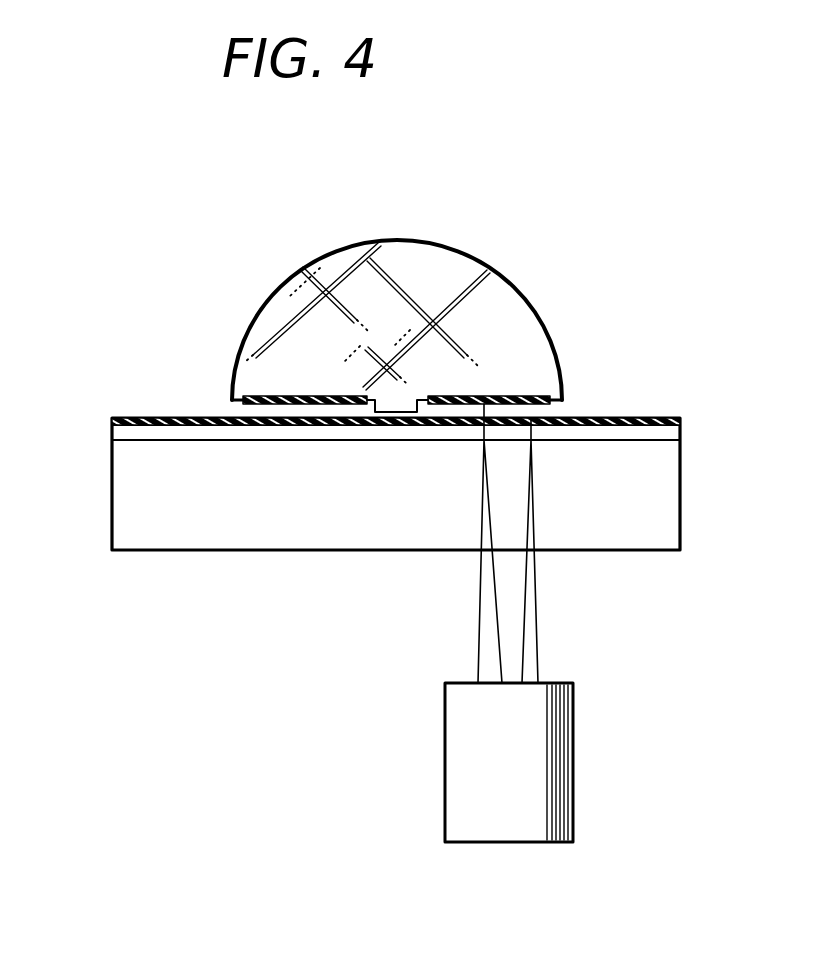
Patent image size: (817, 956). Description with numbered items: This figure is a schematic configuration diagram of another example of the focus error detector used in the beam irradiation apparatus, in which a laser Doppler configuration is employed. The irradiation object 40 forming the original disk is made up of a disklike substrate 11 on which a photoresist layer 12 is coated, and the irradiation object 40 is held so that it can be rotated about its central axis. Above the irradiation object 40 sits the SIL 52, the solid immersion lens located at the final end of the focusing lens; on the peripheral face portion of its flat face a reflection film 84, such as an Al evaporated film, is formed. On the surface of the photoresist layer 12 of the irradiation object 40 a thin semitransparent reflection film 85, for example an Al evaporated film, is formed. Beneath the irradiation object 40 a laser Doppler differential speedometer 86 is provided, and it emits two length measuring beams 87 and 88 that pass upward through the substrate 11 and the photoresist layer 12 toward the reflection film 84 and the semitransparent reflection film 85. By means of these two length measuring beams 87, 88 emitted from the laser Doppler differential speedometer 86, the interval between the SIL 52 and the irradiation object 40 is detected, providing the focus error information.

The disklike substrate 11 is at (668, 429).
The photoresist layer 12 is at (653, 478).
The irradiation object 40 is at (682, 520).
The SIL 52 is at (395, 240).
The reflection film 84 is at (522, 398).
The semitransparent reflection film 85 is at (646, 418).
The laser Doppler differential speedometer 86 is at (575, 745).
The length measuring beam 87 is at (478, 602).
The length measuring beam 88 is at (540, 618).